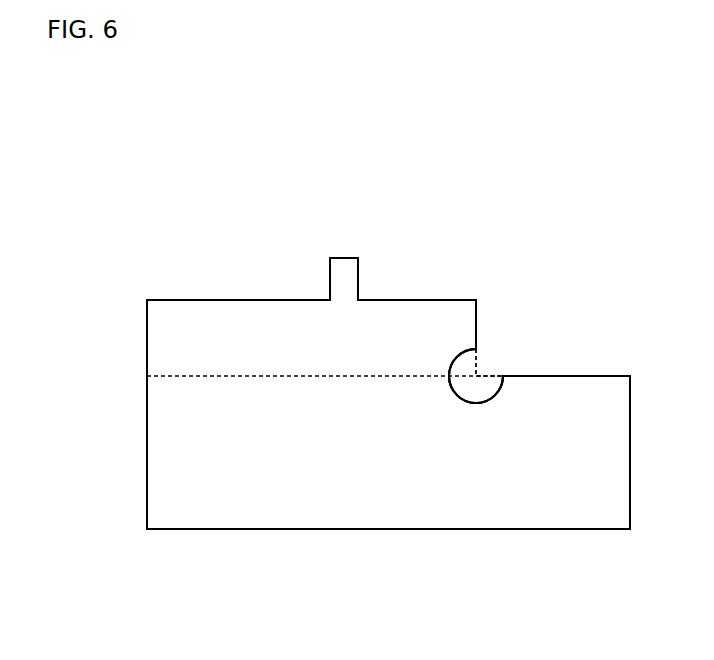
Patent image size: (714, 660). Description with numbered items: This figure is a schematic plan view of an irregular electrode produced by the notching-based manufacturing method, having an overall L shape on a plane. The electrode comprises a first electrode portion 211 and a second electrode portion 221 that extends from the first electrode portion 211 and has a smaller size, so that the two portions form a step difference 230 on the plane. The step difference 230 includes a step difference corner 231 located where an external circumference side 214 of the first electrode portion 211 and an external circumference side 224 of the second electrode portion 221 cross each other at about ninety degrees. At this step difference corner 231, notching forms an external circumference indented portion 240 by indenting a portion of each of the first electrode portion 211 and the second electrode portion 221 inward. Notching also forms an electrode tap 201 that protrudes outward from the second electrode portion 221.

The electrode tap 201 is at (350, 262).
The first electrode portion 211 is at (247, 507).
The external circumference side 214 is at (582, 376).
The second electrode portion 221 is at (212, 325).
The external circumference side 224 is at (478, 313).
The step difference 230 is at (521, 323).
The step difference corner 231 is at (477, 373).
The external circumference indented portion 240 is at (450, 411).